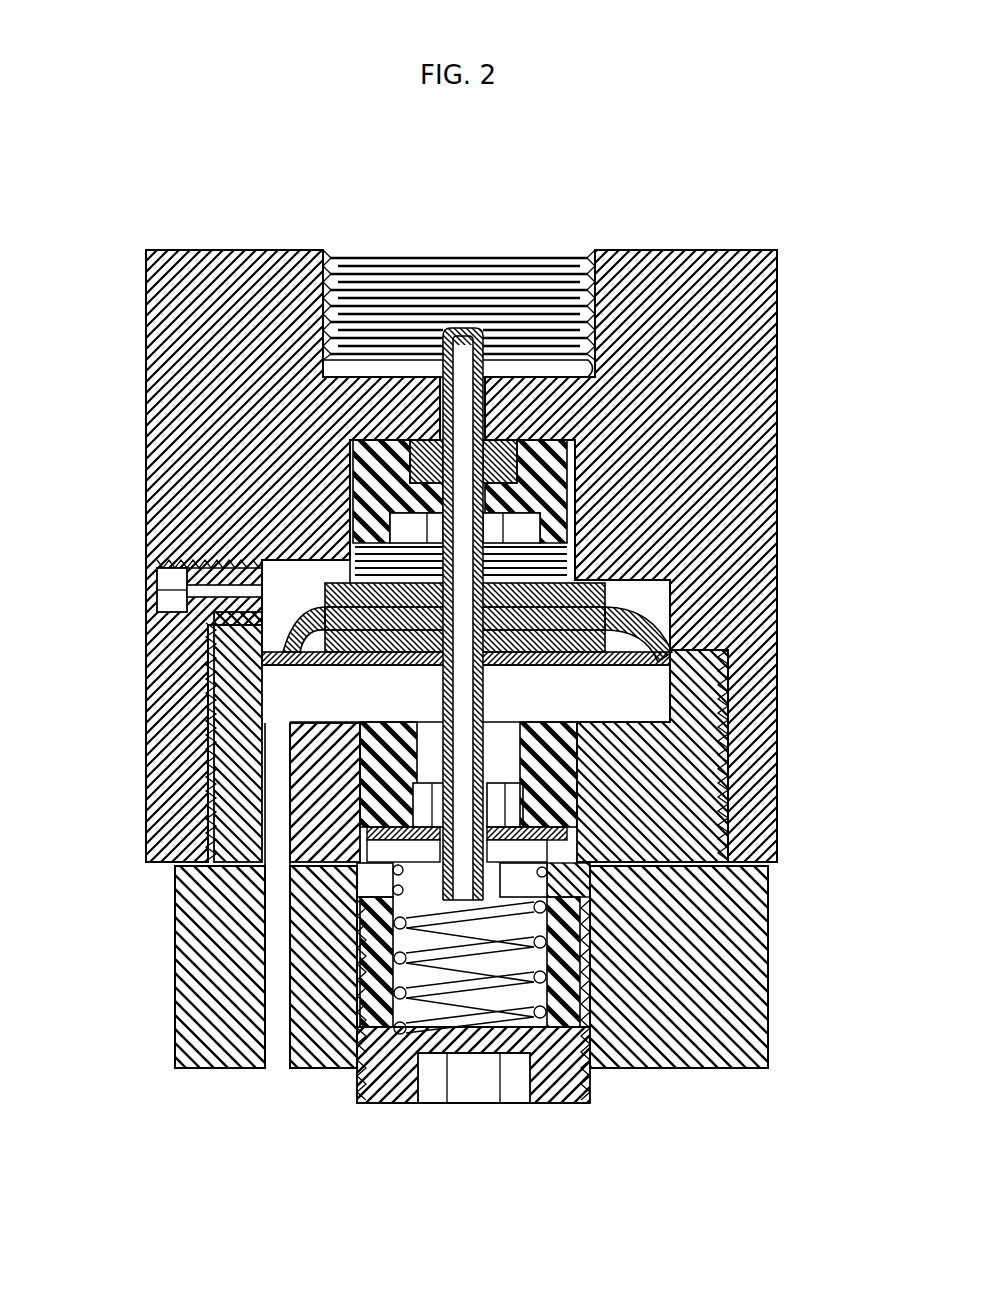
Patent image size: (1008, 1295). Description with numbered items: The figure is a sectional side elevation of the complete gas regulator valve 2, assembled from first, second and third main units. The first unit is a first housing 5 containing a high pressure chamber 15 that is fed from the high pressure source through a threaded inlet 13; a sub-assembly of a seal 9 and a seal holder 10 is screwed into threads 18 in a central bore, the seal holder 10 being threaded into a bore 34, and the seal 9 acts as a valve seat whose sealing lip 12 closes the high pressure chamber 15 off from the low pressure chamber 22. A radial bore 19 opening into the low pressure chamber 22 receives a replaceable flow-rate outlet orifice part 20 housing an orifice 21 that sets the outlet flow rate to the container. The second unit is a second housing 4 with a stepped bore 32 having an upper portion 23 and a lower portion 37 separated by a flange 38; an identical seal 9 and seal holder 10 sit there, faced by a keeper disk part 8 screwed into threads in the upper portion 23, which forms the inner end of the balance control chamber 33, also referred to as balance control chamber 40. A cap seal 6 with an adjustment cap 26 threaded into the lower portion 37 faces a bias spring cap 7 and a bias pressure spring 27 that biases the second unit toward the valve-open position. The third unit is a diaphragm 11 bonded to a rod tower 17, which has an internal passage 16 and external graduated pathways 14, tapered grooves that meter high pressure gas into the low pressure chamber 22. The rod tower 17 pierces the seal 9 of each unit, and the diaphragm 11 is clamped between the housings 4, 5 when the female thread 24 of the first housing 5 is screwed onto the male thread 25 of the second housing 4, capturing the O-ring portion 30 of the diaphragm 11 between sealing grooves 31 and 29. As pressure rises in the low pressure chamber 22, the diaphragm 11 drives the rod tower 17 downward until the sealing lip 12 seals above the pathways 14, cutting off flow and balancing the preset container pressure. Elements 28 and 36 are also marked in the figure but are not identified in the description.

The valve 2 is at (472, 604).
The second housing 4 is at (723, 1037).
The first housing 5 is at (745, 310).
The cap seal 6 is at (592, 957).
The bias spring cap 7 is at (415, 893).
The keeper disk part 8 is at (590, 852).
The seal 9 is at (545, 455).
The seal holder 10 is at (550, 520).
The diaphragm 11 is at (350, 550).
The sealing lip 12 is at (690, 252).
The threaded inlet 13 is at (600, 262).
The external graduated pathways 14 is at (490, 437).
The high pressure chamber 15 is at (500, 275).
The internal passage 16 is at (462, 377).
The rod tower 17 is at (450, 345).
The threads 18 is at (205, 440).
The radial bore 19 is at (212, 545).
The replaceable flow-rate outlet orifice part 20 is at (207, 568).
The orifices 21 is at (203, 590).
The low pressure chamber 22 is at (290, 605).
The upper portion of stepped bore 23 is at (340, 778).
The female thread 24 is at (195, 797).
The male thread 25 is at (197, 833).
The adjustment cap 26 is at (600, 998).
The bias pressure spring 27 is at (427, 1007).
The bypass passage 28 is at (275, 855).
The sealing groove 29 is at (705, 660).
The O-ring portion 30 is at (708, 655).
The sealing groove 31 is at (700, 622).
The stepped bore 32 is at (612, 1048).
The balance control chamber 33 is at (373, 877).
The bore 34 is at (515, 470).
The lower seal ring 36 is at (582, 790).
The lower portion of stepped bore 37 is at (597, 918).
The flange 38 is at (590, 885).
The balance control chamber 40 is at (355, 1060).